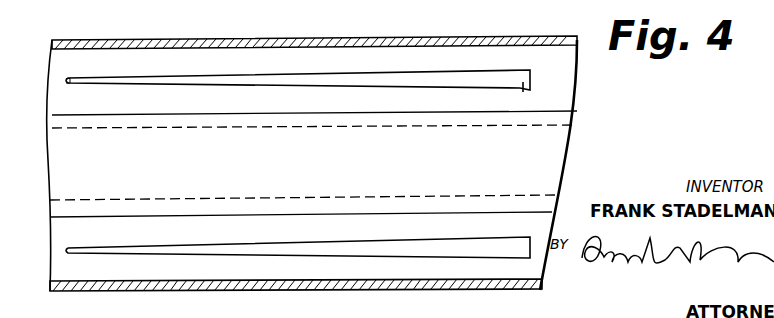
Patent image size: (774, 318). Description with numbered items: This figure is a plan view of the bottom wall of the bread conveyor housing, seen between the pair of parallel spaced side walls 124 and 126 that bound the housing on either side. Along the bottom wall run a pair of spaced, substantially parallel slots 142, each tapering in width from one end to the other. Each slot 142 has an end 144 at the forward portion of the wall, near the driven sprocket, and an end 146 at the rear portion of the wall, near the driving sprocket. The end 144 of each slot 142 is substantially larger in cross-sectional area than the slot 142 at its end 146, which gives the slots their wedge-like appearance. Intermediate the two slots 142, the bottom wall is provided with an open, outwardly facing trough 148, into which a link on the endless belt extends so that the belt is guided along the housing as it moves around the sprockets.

The side wall 124 is at (327, 43).
The side wall 126 is at (350, 286).
The slot 142 is at (240, 80).
The end of slot 144 is at (523, 85).
The end of slot 146 is at (91, 78).
The trough 148 is at (552, 162).